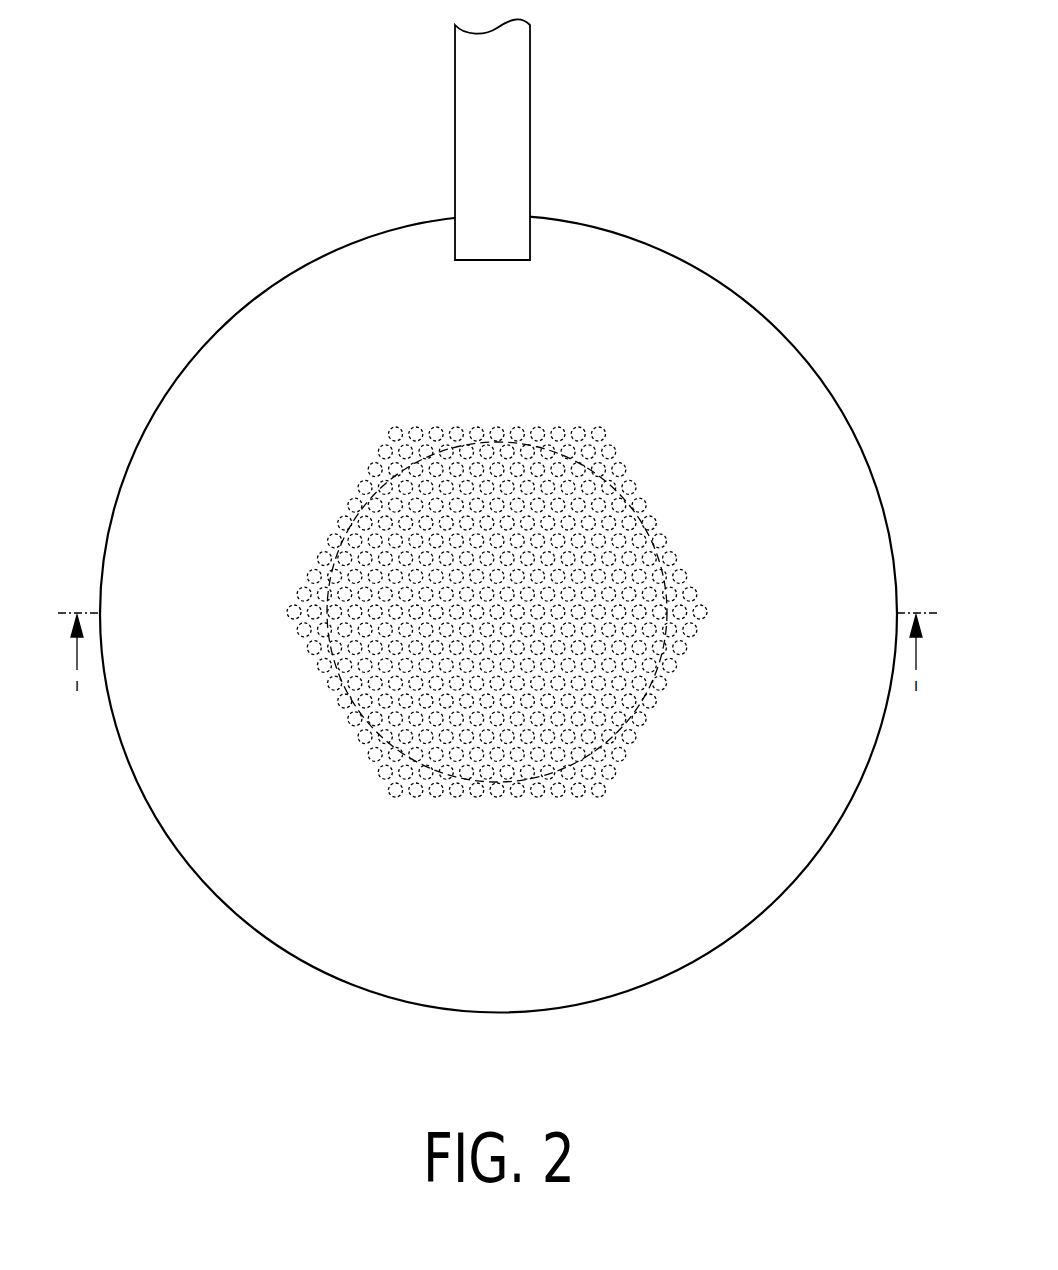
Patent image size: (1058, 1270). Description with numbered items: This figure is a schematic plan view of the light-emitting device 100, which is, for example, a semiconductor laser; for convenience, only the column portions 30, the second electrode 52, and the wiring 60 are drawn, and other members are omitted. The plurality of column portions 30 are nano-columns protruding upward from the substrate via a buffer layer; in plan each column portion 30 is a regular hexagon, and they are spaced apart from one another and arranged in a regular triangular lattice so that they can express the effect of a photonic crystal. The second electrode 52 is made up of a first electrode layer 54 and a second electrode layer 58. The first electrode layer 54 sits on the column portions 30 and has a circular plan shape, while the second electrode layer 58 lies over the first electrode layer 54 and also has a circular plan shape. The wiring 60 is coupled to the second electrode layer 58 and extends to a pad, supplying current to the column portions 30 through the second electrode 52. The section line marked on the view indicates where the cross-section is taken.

The light-emitting device 100 is at (788, 300).
The wiring 60 is at (495, 138).
The second electrode 52 is at (367, 168).
The first electrode layer 54 is at (395, 428).
The second electrode layer 58 is at (277, 375).
The column portion 30 is at (392, 745).